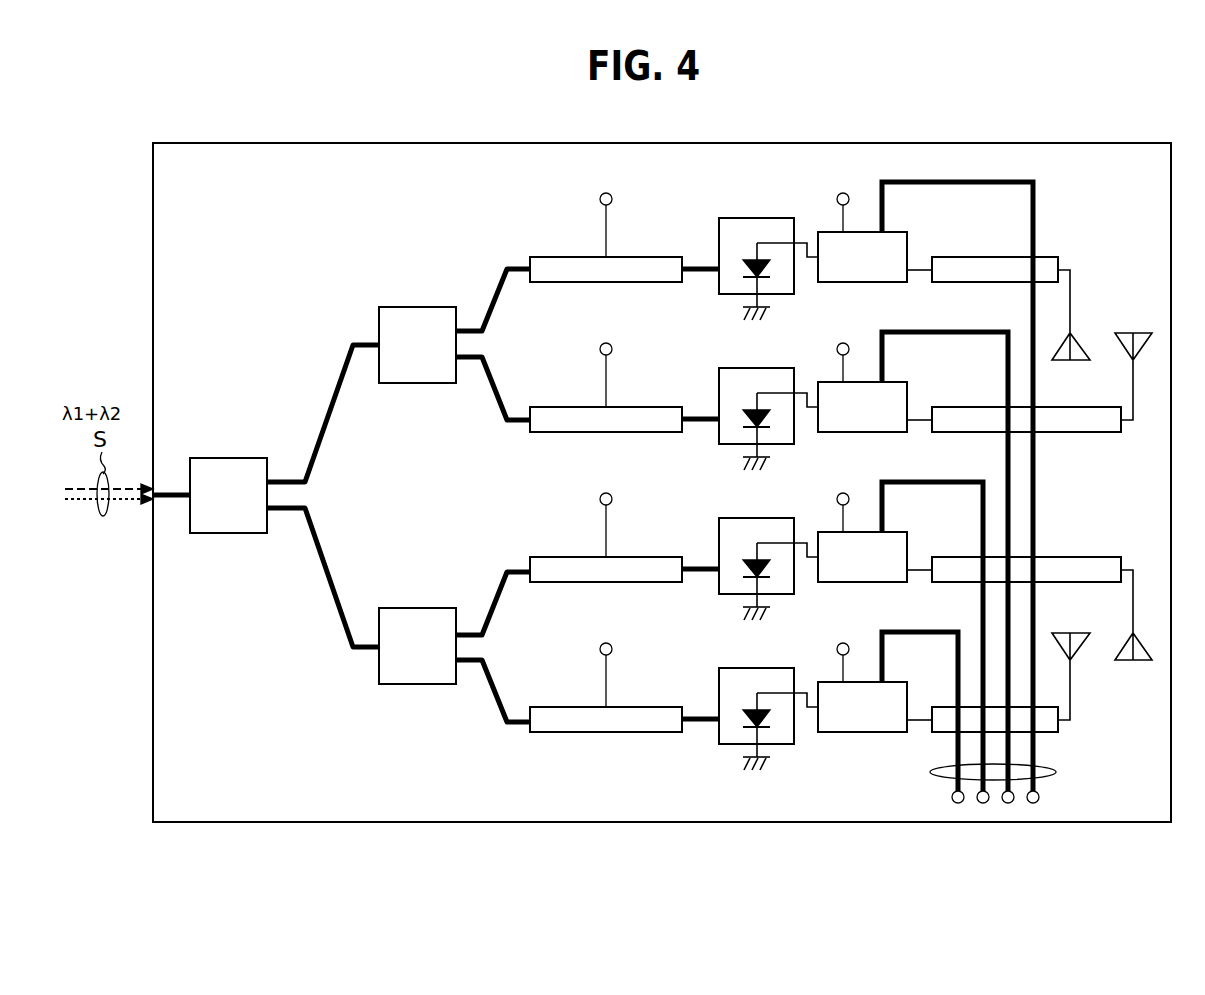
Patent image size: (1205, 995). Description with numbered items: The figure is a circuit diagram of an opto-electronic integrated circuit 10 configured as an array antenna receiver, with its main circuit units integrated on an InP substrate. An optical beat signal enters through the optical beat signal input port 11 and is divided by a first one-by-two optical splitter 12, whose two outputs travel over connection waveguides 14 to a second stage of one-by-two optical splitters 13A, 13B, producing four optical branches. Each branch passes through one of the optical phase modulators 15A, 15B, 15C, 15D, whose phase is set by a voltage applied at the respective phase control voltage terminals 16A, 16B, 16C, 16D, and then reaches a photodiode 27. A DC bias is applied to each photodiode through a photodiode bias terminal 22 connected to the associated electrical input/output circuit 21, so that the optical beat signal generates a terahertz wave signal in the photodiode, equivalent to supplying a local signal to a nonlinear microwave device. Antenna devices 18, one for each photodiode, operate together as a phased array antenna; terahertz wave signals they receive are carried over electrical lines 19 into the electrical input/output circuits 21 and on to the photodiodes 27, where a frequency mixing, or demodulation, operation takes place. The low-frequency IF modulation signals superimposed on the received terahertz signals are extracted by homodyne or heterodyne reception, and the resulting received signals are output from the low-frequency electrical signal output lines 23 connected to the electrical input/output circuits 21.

The opto-electronic integrated circuit 10 is at (198, 143).
The optical beat signal input port 11 is at (157, 500).
The 1×2 optical splitter 12 is at (303, 438).
The 1×2 optical splitter 13A is at (480, 297).
The 1×2 optical splitter 13B is at (480, 599).
The connection waveguide 14 is at (355, 332).
The optical phase modulator 15A is at (550, 257).
The optical phase modulator 15B is at (550, 407).
The optical phase modulator 15C is at (550, 557).
The optical phase modulator 15D is at (550, 707).
The phase control voltage terminal 16A is at (612, 199).
The phase control voltage terminal 16B is at (612, 349).
The phase control voltage terminal 16C is at (612, 499).
The phase control voltage terminal 16D is at (612, 649).
The photodiode 27 is at (745, 218).
The photodiode bias terminal 22 is at (836, 199).
The electrical input/output circuit 21 is at (857, 282).
The electrical line 19 is at (1046, 257).
The antenna device 18 is at (1070, 300).
The low-frequency electrical signal output line 23 is at (1056, 772).